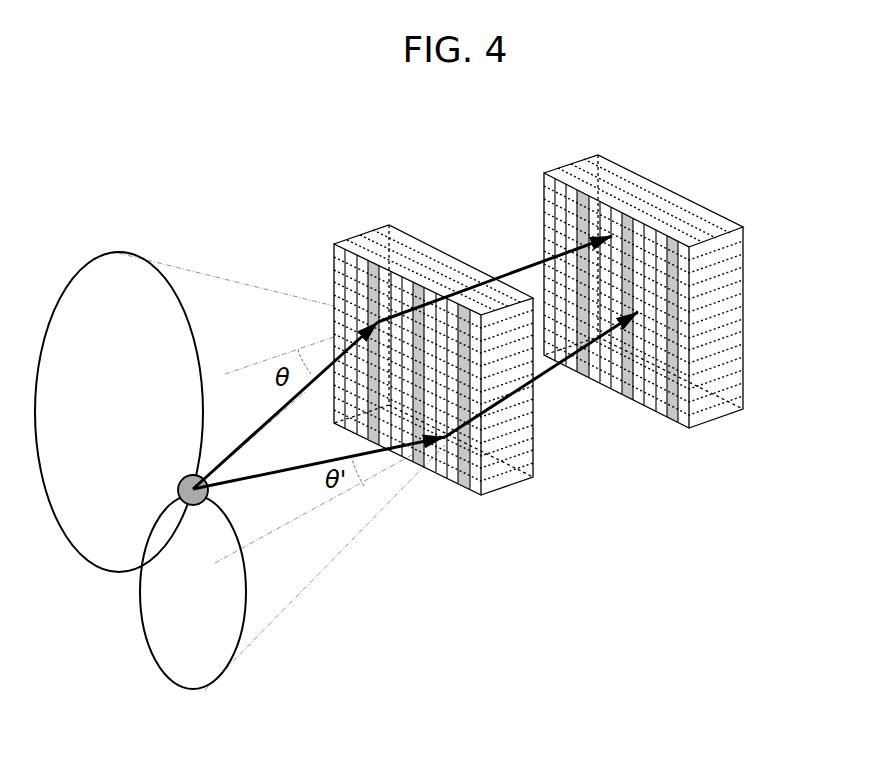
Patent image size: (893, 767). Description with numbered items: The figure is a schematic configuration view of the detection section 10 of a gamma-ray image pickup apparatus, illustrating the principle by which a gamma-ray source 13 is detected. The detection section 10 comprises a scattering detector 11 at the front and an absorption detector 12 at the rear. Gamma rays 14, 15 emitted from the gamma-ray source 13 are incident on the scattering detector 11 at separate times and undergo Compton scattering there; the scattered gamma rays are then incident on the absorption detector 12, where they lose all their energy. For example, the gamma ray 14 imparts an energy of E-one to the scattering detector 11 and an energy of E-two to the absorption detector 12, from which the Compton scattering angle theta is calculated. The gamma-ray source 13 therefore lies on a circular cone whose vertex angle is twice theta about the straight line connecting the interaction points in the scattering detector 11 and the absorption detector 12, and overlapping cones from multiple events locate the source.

The detection section 10 is at (574, 132).
The scattering detector 11 is at (452, 507).
The absorption detector 12 is at (703, 437).
The gamma-ray source 13 is at (182, 470).
The gamma ray 14 is at (268, 418).
The gamma ray 15 is at (272, 477).